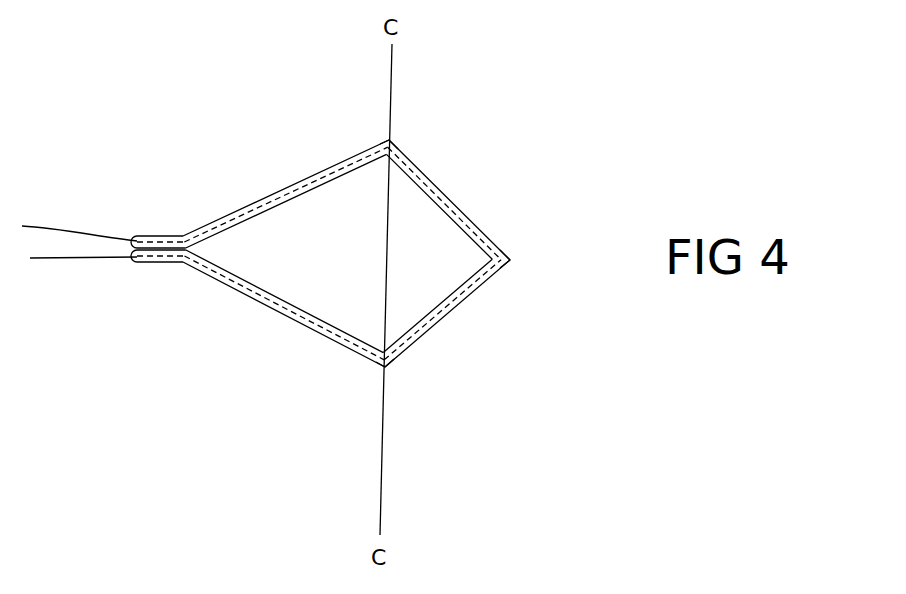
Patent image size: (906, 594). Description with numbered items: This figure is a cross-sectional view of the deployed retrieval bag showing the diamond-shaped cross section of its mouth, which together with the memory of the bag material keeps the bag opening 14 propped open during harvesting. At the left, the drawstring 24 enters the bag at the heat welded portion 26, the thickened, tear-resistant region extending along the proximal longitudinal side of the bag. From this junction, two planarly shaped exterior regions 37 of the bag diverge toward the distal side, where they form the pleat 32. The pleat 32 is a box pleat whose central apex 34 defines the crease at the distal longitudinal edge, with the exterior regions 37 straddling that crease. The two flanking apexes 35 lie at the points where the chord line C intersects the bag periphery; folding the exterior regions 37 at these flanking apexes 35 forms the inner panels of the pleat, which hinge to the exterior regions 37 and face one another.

The opening 14 is at (354, 235).
The drawstring 24 is at (83, 232).
The heat welded portion 26 is at (163, 237).
The pleat 32 is at (462, 207).
The apex 34 is at (512, 259).
The flanking apexes 35 is at (392, 143).
The exterior regions 37 is at (293, 183).